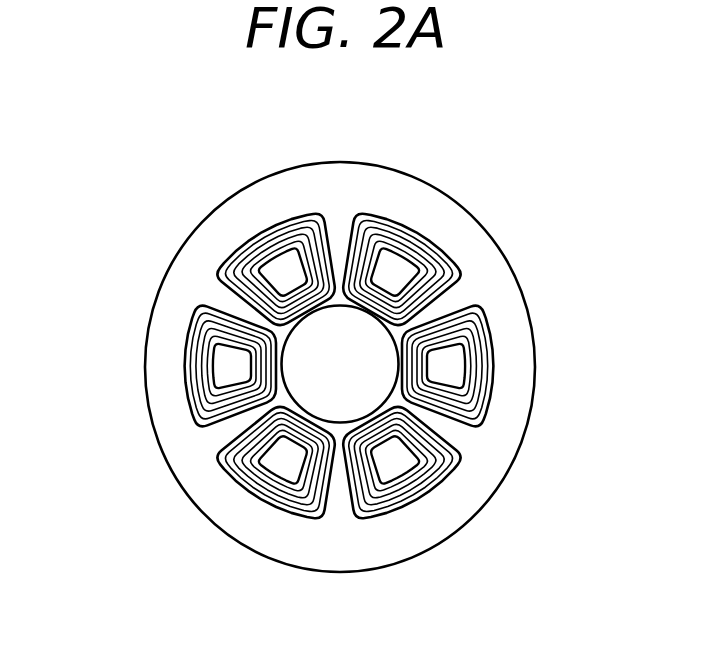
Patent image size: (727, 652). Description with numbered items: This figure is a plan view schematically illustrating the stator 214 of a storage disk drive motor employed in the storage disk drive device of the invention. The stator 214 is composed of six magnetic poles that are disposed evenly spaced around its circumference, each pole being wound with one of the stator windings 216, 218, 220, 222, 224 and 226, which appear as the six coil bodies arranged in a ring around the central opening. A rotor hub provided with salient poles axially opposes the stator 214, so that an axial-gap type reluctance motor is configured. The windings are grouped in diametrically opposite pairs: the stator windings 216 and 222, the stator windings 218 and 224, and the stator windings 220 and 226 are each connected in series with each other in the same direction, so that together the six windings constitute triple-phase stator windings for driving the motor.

The stator 214 is at (437, 186).
The stator winding 216 is at (443, 253).
The stator winding 218 is at (495, 356).
The stator winding 220 is at (420, 500).
The stator winding 222 is at (258, 502).
The stator winding 224 is at (193, 380).
The stator winding 226 is at (257, 230).